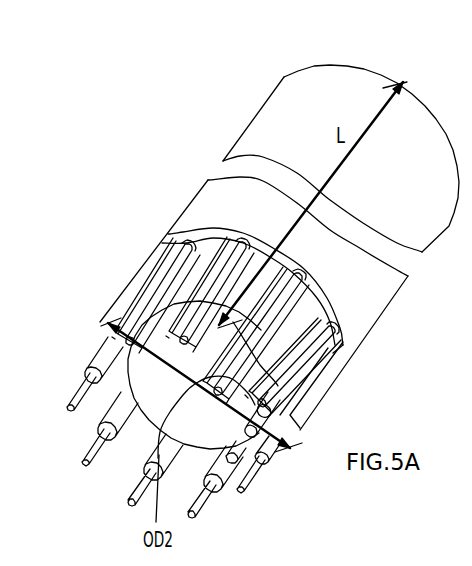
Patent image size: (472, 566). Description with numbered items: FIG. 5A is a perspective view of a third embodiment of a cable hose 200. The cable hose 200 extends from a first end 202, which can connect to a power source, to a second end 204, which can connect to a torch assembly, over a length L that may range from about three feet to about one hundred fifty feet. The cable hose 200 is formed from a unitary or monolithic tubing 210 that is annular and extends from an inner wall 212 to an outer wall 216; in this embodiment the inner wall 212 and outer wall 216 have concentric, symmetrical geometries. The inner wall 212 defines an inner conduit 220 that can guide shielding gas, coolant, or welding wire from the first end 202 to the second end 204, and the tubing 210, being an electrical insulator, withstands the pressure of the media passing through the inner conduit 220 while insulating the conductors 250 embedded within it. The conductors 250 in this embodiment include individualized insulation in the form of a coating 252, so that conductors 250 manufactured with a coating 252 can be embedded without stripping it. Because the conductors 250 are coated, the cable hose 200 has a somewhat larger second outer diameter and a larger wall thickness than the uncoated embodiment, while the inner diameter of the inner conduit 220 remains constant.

The cable hose 200 is at (238, 276).
The first end 202 is at (99, 337).
The second end 204 is at (289, 74).
The tubing 210 is at (226, 156).
The inner wall 212 is at (189, 435).
The outer wall 216 is at (134, 442).
The inner conduit 220 is at (159, 329).
The conductors 250 is at (74, 410).
The coating 252 is at (87, 358).